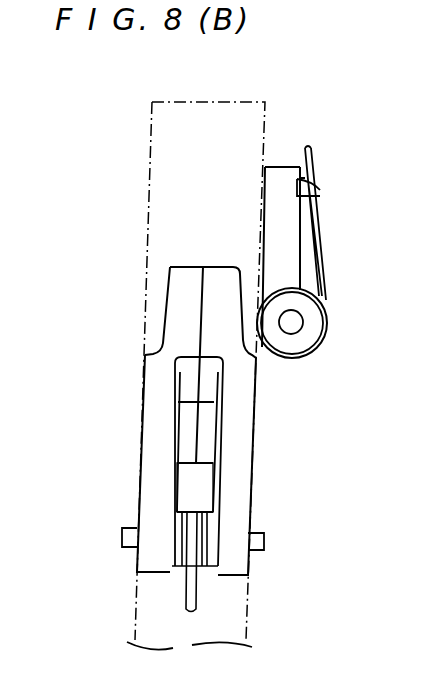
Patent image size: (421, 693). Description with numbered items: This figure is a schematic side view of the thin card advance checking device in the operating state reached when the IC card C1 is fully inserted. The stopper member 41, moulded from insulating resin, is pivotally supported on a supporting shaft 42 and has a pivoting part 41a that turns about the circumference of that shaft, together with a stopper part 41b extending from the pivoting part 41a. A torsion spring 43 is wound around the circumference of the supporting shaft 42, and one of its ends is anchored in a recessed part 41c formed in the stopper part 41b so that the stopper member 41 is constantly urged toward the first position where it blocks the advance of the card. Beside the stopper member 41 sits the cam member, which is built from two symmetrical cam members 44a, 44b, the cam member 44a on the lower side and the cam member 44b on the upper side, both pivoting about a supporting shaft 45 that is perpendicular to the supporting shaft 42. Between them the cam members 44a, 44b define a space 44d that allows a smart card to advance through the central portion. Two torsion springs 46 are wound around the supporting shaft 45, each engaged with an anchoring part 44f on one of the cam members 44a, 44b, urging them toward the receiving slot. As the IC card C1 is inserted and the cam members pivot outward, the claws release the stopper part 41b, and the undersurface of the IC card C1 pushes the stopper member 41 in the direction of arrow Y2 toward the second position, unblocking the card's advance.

The stopper member 41 is at (263, 241).
The pivoting part 41a is at (300, 343).
The stopper part 41b is at (296, 236).
The recessed part 41c is at (320, 190).
The supporting shaft 42 is at (290, 332).
The torsion spring 43 is at (326, 340).
The cam member 44a is at (245, 485).
The cam member 44b is at (142, 468).
The space 44d is at (203, 494).
The anchoring part 44f is at (177, 364).
The supporting shaft 45 is at (265, 543).
The torsion spring 46 is at (172, 566).
The IC card C1 is at (163, 101).
The arrow Y2 is at (217, 172).